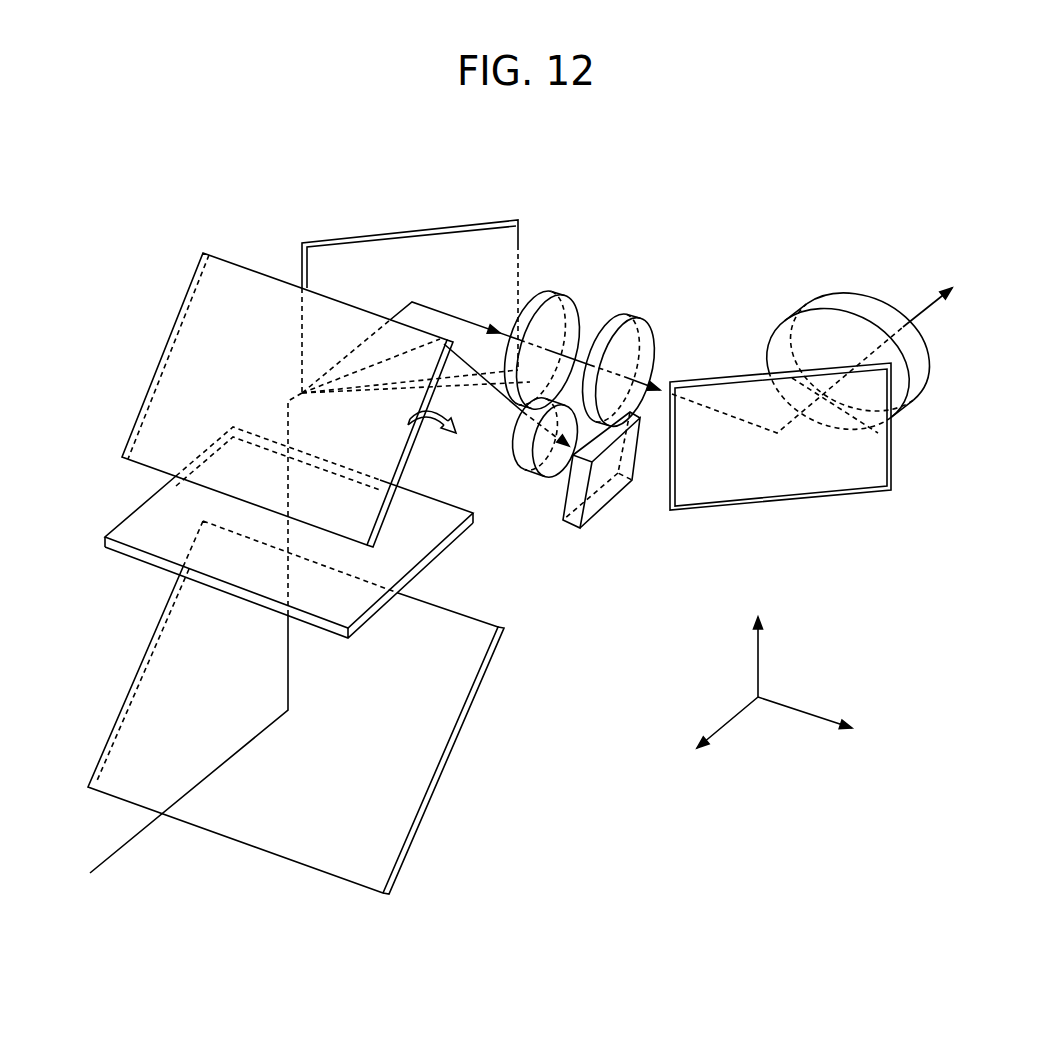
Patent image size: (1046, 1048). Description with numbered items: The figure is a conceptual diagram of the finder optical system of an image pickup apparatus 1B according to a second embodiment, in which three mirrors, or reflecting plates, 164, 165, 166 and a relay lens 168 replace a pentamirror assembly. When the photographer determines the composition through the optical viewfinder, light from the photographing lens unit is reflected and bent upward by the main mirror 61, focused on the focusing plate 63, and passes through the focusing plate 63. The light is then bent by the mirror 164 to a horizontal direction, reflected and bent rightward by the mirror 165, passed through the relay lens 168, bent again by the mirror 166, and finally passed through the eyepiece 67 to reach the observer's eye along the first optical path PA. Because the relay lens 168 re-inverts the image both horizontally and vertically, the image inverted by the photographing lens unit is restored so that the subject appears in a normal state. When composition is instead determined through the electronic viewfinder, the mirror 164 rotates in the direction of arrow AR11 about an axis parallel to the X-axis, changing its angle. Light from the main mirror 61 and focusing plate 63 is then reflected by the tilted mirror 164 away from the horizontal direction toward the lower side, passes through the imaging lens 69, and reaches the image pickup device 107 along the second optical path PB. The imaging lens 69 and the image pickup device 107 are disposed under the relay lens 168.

The image pickup apparatus 1B is at (187, 133).
The main mirror 61 is at (163, 688).
The focusing plate 63 is at (158, 510).
The mirror 164 is at (238, 276).
The mirror 165 is at (415, 258).
The relay lens 168 is at (660, 320).
The imaging lens 69 is at (545, 478).
The image pickup device 107 is at (611, 498).
The mirror 166 is at (750, 382).
The eyepiece 67 is at (864, 305).
The first optical path PA is at (926, 306).
The second optical path PB is at (490, 383).
The arrow AR11 is at (455, 440).